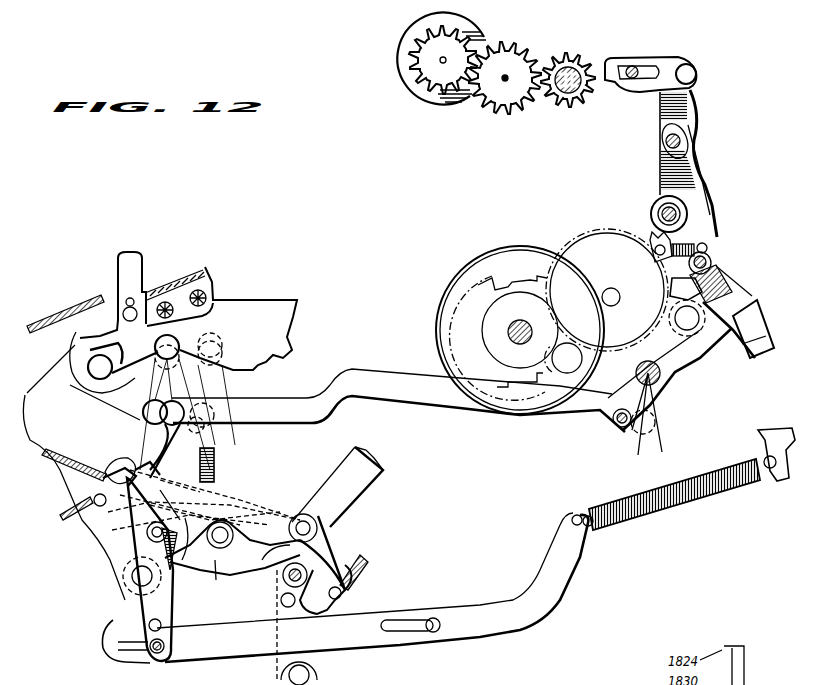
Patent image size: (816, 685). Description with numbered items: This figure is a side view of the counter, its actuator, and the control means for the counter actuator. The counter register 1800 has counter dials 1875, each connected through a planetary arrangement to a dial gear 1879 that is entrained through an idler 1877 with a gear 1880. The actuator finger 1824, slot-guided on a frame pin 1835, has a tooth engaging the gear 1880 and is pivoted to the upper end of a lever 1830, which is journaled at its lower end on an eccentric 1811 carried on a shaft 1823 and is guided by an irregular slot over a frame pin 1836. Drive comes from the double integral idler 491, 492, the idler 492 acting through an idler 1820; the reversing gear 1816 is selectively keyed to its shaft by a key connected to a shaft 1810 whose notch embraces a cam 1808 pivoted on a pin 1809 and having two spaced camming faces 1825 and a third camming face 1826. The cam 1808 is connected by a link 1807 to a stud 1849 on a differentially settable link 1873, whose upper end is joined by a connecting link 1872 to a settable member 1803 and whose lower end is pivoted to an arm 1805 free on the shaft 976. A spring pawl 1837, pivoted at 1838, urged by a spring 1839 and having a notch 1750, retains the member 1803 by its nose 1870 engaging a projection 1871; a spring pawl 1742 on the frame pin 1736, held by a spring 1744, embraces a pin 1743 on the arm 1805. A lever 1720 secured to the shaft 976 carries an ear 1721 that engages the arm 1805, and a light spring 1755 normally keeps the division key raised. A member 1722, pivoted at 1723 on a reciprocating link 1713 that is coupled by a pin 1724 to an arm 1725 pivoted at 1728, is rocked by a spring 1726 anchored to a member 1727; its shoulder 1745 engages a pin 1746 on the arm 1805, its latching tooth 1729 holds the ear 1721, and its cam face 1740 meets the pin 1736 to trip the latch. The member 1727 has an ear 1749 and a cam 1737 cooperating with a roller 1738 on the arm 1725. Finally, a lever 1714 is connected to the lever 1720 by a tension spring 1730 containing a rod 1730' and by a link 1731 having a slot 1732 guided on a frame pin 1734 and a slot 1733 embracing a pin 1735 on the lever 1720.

The counter register 1800 is at (396, 25).
The counter dial 1875 is at (400, 46).
The dial gear 1879 is at (415, 60).
The idler 1877 is at (506, 112).
The gear 1880 is at (562, 108).
The actuator finger 1824 is at (631, 57).
The frame pin 1835 is at (641, 70).
The lever 1830 is at (696, 104).
The frame pin 1836 is at (665, 143).
The eccentric 1811 is at (652, 212).
The shaft 1823 is at (678, 211).
The gear 1816 is at (703, 258).
The shaft 1810 is at (722, 262).
The third camming face 1826 is at (738, 305).
The camming faces 1825 is at (682, 288).
The idler 1820 is at (695, 328).
The pin 1809 is at (660, 378).
The cam 1808 is at (640, 414).
The idler 491 is at (575, 252).
The idler 492 is at (600, 236).
The settable member 1803 is at (137, 265).
The projection 1871 is at (92, 310).
The spring pawl 1837 is at (78, 352).
The nose 1870 is at (88, 368).
The connecting link 1872 is at (152, 373).
The differentially settable link 1873 is at (148, 405).
The stud 1849 is at (165, 415).
The pivot 1838 is at (208, 425).
The spring 1755 is at (62, 432).
The latching tooth 1729 is at (125, 462).
The ear 1721 is at (88, 472).
The spring 1839 is at (75, 512).
The notch 1750 is at (108, 512).
The ear 1749 is at (112, 530).
The pin 1746 is at (150, 535).
The lever 1720 is at (130, 548).
The shaft 976 is at (135, 580).
The slot 1733 is at (114, 628).
The pin 1735 is at (155, 655).
The arm 1805 is at (174, 578).
The spring 1744 is at (216, 463).
The link 1807 is at (299, 420).
The member 1722 is at (236, 500).
The pin 1743 is at (205, 526).
The cam face 1740 is at (247, 538).
The frame pin 1736 is at (236, 560).
The shoulder 1745 is at (262, 560).
The cam 1737 is at (284, 578).
The pin 1724 is at (284, 588).
The roller 1738 is at (282, 604).
The arm 1725 is at (280, 616).
The pivot 1728 is at (290, 677).
The spring pawl 1742 is at (296, 510).
The link 1713 is at (352, 488).
The pivot 1723 is at (318, 526).
The member 1727 is at (348, 557).
The spring 1726 is at (356, 572).
The slot 1732 is at (390, 622).
The frame pin 1734 is at (437, 620).
The link 1731 is at (570, 565).
The spring eye 1730' is at (626, 528).
The tension spring 1730 is at (674, 494).
The lever 1714 is at (772, 478).